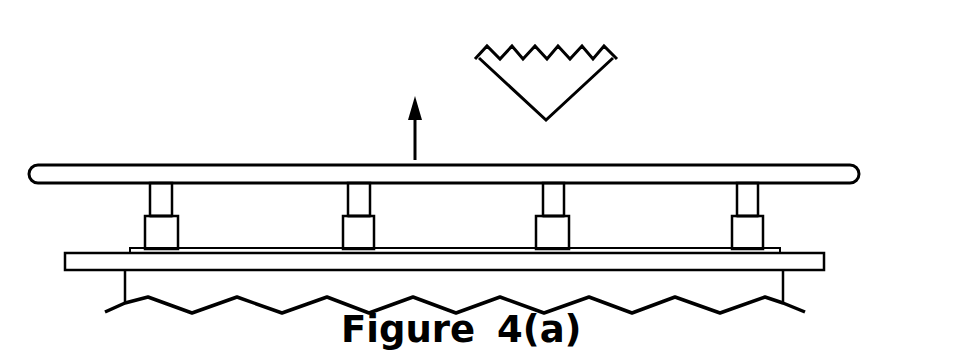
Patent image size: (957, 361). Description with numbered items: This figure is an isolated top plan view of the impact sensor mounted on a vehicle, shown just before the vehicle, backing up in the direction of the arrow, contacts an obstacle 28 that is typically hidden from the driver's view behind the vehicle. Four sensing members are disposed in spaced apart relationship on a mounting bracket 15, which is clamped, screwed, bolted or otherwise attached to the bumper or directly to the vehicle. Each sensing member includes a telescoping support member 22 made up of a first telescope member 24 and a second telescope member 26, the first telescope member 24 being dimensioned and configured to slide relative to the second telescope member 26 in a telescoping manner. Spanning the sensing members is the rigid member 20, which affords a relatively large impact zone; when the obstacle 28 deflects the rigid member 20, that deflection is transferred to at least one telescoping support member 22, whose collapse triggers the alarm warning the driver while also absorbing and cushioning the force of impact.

The mounting bracket 15 is at (783, 248).
The rigid member 20 is at (392, 170).
The telescoping support member 22 is at (172, 217).
The first telescope member 24 is at (156, 200).
The second telescope member 26 is at (156, 232).
The obstacle 28 is at (522, 65).